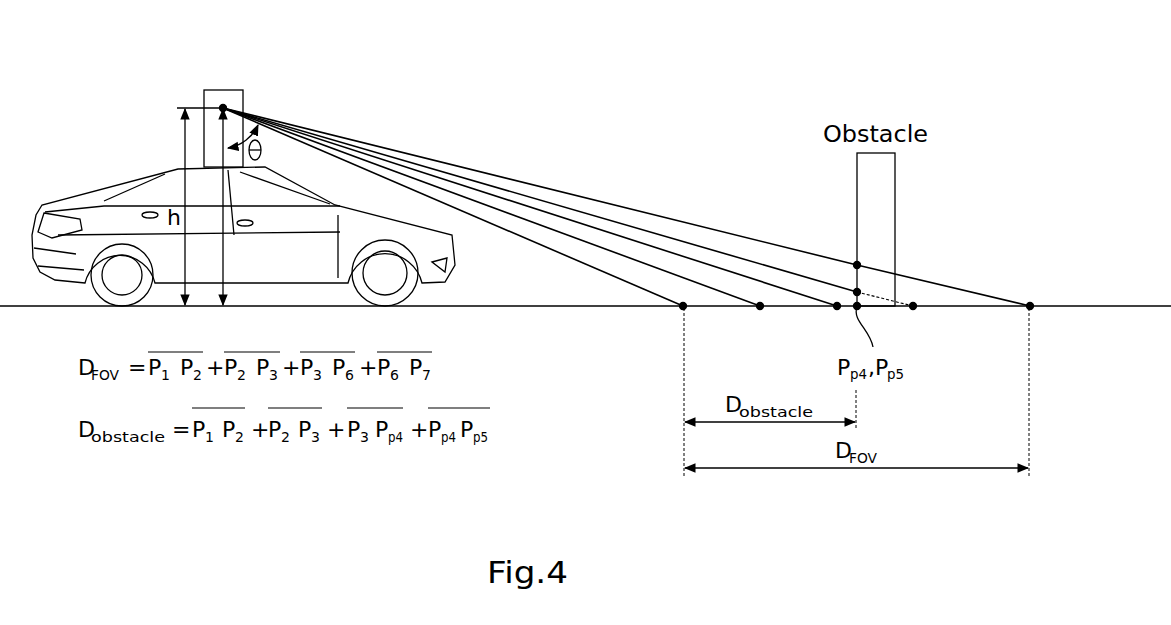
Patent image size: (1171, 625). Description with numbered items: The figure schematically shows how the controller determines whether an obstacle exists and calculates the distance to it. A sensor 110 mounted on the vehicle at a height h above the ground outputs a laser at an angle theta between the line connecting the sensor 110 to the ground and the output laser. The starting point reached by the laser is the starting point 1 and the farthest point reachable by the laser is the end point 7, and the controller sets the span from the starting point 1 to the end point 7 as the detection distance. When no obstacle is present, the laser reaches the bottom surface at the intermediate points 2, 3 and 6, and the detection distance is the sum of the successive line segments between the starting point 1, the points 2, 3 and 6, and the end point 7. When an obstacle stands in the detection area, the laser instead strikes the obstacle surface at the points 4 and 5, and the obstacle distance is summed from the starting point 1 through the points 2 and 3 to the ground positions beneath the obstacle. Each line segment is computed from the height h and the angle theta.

The sensor 110 is at (223, 88).
The starting point P1 1 is at (684, 322).
The point P2 2 is at (761, 322).
The point P3 3 is at (838, 322).
The point P4 4 is at (857, 292).
The point P5 5 is at (857, 265).
The point P6 6 is at (914, 322).
The end point P7 7 is at (1029, 322).